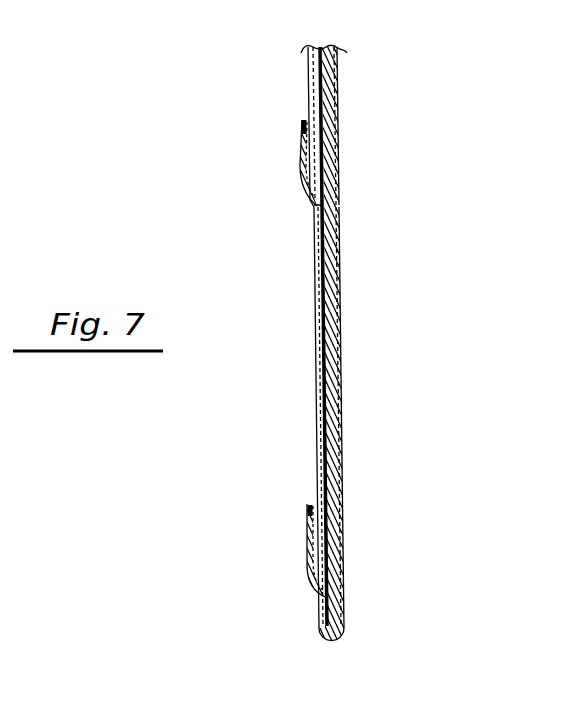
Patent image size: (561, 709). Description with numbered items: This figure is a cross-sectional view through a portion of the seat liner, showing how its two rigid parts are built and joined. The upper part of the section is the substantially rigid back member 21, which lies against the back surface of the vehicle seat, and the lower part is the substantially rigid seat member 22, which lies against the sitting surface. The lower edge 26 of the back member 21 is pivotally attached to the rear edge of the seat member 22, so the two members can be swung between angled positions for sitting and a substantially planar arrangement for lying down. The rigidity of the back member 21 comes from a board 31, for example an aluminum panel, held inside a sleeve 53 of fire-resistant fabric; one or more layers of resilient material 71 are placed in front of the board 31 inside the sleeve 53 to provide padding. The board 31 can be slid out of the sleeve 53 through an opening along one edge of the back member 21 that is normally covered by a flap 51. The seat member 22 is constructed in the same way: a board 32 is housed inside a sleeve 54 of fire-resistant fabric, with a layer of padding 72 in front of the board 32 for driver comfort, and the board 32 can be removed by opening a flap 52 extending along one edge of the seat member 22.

The back member 21 is at (339, 130).
The seat member 22 is at (347, 423).
The lower edge of the back member 26 is at (330, 205).
The board 31 is at (318, 100).
The board 32 is at (320, 275).
The flap 51 is at (302, 149).
The flap 52 is at (307, 528).
The sleeve 53 is at (310, 72).
The sleeve 54 is at (319, 430).
The layers of resilient material 71 is at (332, 112).
The layer of padding 72 is at (338, 332).